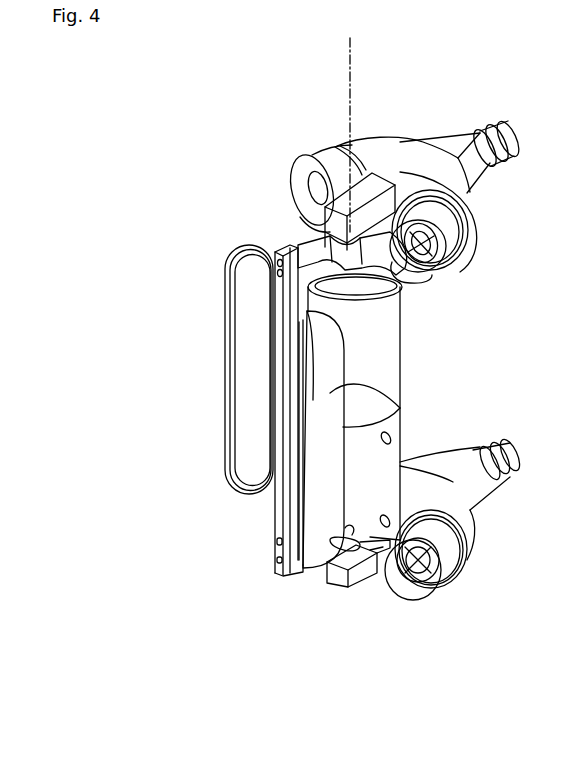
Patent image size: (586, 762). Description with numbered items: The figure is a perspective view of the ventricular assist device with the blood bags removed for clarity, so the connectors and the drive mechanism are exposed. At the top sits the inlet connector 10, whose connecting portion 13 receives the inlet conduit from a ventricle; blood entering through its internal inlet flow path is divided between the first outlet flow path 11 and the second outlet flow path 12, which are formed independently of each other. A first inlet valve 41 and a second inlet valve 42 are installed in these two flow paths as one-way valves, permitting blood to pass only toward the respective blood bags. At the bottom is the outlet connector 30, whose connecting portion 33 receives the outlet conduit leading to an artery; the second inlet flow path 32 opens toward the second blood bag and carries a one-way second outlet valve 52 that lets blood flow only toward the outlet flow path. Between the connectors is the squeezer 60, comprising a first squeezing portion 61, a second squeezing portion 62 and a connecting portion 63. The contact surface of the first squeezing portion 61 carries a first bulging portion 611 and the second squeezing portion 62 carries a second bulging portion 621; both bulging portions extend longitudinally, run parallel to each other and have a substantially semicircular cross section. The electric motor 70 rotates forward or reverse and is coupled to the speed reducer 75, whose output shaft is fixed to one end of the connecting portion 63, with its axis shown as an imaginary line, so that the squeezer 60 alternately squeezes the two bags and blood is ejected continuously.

The inlet connector 10 is at (428, 128).
The first outlet flow path 11 is at (303, 187).
The second outlet flow path 12 is at (408, 268).
The connecting portion 13 is at (490, 158).
The outlet connector 30 is at (488, 514).
The second inlet flow path 32 is at (400, 575).
The connecting portion 33 is at (490, 470).
The first inlet valve 41 is at (322, 200).
The second inlet valve 42 is at (423, 265).
The second outlet valve 52 is at (413, 580).
The squeezer 60 is at (130, 461).
The first squeezing portion 61 is at (228, 395).
The first bulging portion 611 is at (230, 328).
The second squeezing portion 62 is at (316, 567).
The connecting portion 63 is at (280, 512).
The motor 70 is at (390, 450).
The speed reducer 75 is at (387, 367).
The second bulging portion 621 is at (402, 410).